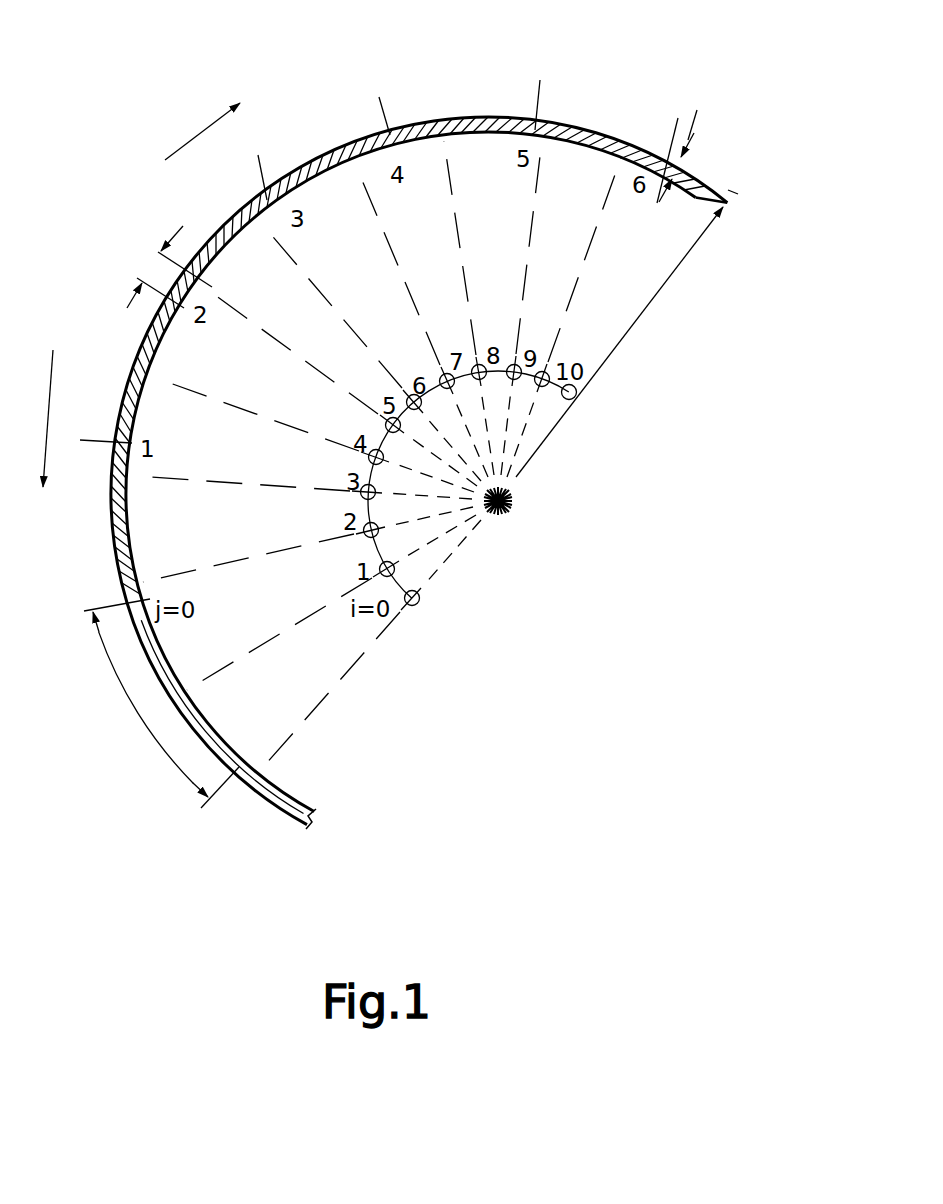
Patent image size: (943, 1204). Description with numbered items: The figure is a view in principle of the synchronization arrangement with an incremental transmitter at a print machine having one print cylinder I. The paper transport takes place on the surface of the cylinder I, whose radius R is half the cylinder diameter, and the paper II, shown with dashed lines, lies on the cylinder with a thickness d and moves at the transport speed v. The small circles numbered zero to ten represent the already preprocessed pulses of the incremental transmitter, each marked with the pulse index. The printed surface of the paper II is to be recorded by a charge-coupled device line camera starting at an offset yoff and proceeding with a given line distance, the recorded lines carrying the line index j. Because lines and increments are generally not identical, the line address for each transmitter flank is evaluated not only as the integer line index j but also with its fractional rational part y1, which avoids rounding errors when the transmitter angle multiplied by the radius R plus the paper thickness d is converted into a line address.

The print cylinder I is at (288, 808).
The paper II is at (579, 128).
The cylinder radius R is at (627, 333).
The paper thickness d is at (688, 154).
The fractional rational part of the line address y1 is at (155, 267).
The offset yoff is at (166, 710).
The line index j is at (202, 131).
The transport speed v is at (34, 418).